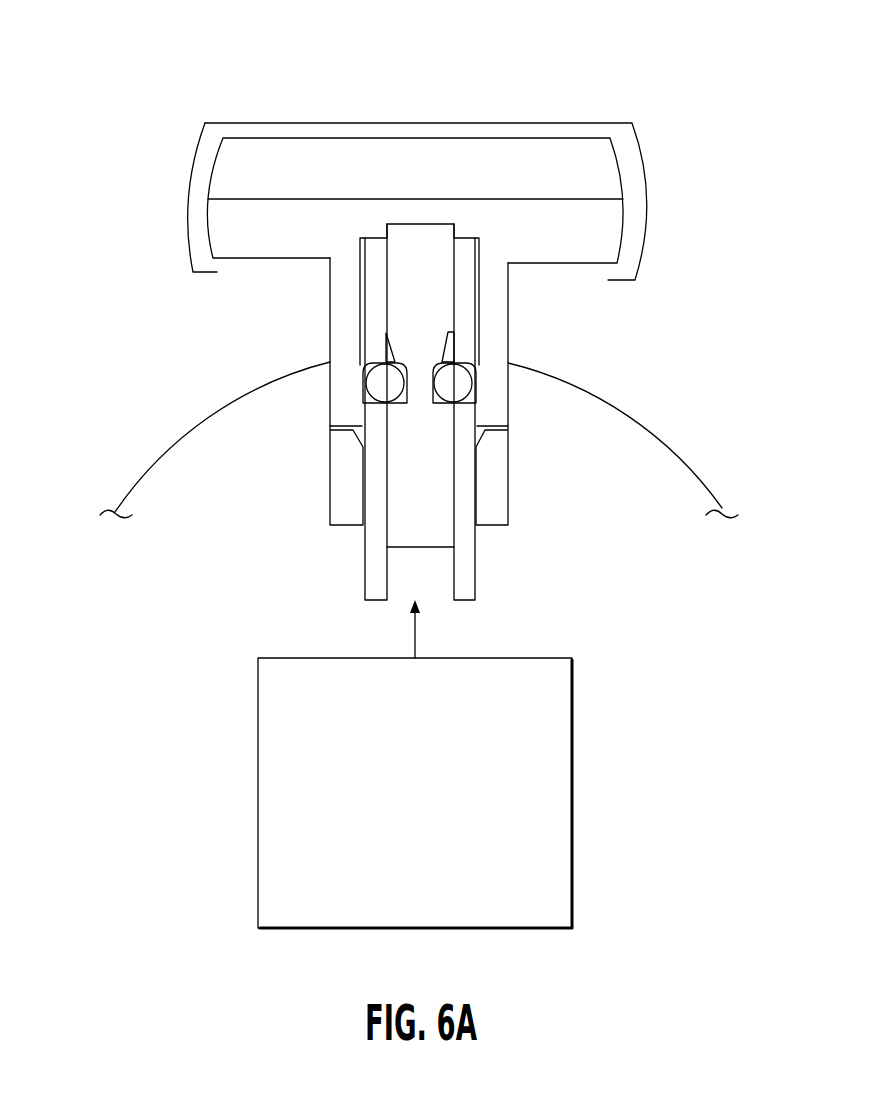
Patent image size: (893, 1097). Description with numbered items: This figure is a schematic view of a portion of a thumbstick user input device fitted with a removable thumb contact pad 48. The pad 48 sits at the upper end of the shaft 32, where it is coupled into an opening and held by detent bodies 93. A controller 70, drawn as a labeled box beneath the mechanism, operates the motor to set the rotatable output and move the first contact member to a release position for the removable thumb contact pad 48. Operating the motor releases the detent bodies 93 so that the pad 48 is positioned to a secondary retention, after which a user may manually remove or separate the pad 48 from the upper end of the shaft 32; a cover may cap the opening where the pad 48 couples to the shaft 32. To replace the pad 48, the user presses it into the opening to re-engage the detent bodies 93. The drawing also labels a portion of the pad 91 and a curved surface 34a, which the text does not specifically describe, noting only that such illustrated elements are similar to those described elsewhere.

The removable thumb contact pad 48 is at (299, 90).
The pad head shell 91 is at (567, 255).
The detent bodies 93 is at (330, 338).
The thumb rest surface 34a is at (160, 445).
The shaft 32 is at (330, 554).
The controller 70 is at (258, 723).